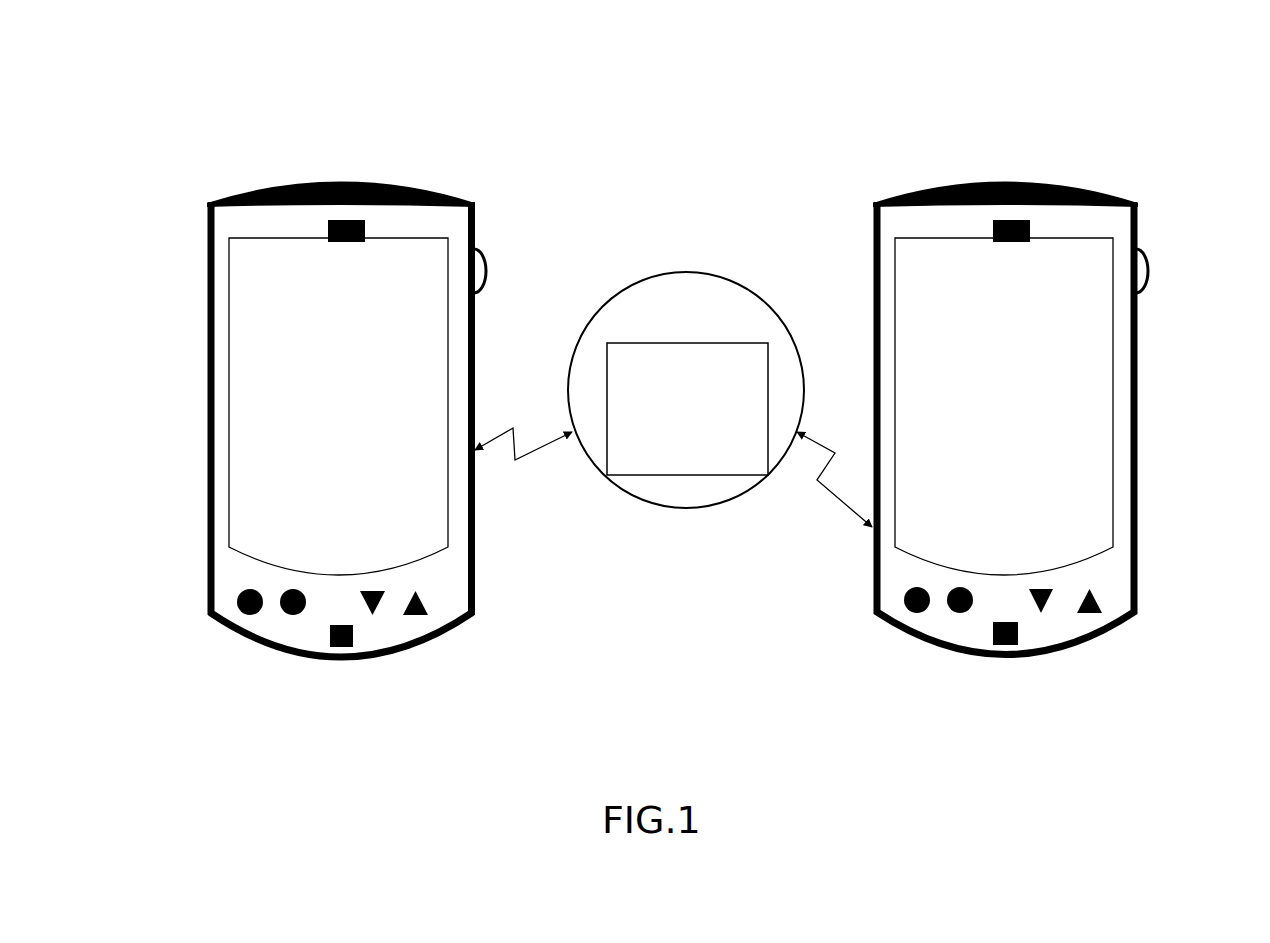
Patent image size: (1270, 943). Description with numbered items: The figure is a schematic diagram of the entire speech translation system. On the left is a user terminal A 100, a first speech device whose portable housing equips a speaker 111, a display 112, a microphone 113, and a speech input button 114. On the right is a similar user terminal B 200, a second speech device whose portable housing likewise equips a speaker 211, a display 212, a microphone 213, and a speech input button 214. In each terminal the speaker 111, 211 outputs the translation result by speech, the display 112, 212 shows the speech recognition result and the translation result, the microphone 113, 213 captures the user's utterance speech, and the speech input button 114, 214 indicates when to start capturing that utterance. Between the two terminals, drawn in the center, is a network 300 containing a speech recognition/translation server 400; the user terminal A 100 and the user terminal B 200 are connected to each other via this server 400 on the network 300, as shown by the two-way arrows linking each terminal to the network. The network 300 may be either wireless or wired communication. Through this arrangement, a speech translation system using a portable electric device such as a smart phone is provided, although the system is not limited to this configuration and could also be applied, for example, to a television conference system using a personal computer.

The user terminal A 100 is at (403, 175).
The speaker 111 is at (340, 222).
The display 112 is at (258, 358).
The microphone 113 is at (328, 627).
The speech input button 114 is at (487, 258).
The user terminal B 200 is at (1018, 178).
The speaker 211 is at (1003, 222).
The display 212 is at (923, 322).
The microphone 213 is at (993, 627).
The speech input button 214 is at (1140, 253).
The network 300 is at (690, 507).
The speech recognition/translation server 400 is at (658, 475).